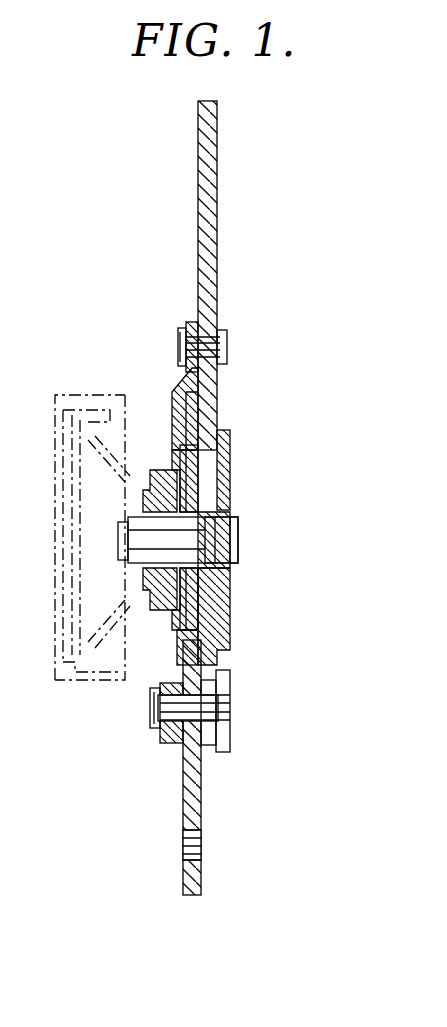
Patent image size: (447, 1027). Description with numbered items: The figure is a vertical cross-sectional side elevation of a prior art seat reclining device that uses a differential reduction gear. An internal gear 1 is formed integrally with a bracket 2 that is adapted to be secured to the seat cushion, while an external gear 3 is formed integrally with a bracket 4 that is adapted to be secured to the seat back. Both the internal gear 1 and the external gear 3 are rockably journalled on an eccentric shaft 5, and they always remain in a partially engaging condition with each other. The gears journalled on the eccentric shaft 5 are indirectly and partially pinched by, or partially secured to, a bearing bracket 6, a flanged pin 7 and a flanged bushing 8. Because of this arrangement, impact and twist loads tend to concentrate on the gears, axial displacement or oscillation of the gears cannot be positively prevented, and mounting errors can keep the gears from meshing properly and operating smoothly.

The internal gear 1 is at (218, 430).
The bracket 2 is at (208, 216).
The external gear 3 is at (222, 612).
The bracket 4 is at (201, 803).
The eccentric shaft 5 is at (238, 537).
The bearing bracket 6 is at (182, 392).
The flanged pin 7 is at (208, 705).
The flanged bushing 8 is at (166, 745).